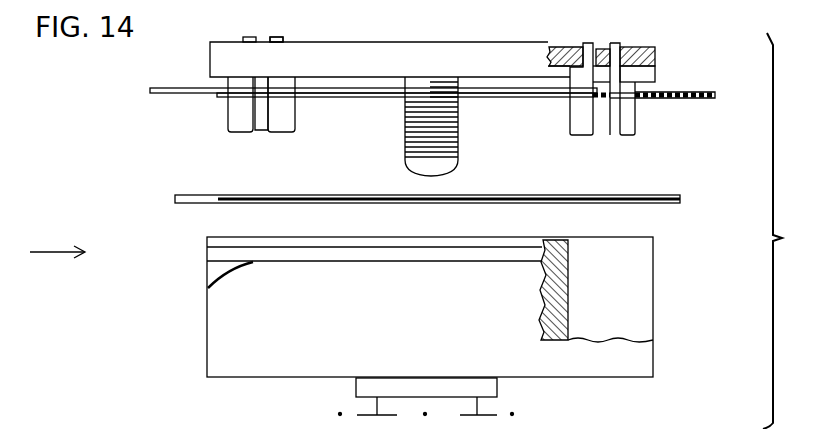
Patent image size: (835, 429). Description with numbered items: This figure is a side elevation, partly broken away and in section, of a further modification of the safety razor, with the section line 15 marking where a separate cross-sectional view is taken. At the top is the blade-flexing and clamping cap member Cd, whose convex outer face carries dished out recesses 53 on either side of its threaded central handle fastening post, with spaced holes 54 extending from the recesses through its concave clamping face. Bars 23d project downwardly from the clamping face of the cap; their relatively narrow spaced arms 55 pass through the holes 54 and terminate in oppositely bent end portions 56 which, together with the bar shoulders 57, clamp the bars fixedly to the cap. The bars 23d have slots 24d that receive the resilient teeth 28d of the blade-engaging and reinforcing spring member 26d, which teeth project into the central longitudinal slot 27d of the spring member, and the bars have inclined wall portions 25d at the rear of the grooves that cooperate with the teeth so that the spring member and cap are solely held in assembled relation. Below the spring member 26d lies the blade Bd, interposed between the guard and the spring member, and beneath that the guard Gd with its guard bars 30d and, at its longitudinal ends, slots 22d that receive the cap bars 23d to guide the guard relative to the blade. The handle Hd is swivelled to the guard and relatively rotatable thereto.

The section line 15 is at (262, 258).
The cap member Cd is at (448, 43).
The oppositely bent end portions 56 is at (283, 40).
The bars 23d is at (296, 117).
The inclined wall portions 25d is at (262, 118).
The slots 24d is at (262, 84).
The spring member 26d is at (152, 91).
The central longitudinal slot 27d is at (558, 99).
The dished out recesses 53 is at (603, 46).
The bar shoulders 57 is at (568, 68).
The resilient teeth 28d is at (596, 98).
The arms 55 is at (614, 50).
The holes 54 is at (622, 44).
The blade Bd is at (189, 195).
The guard Gd is at (207, 356).
The guard bars 30d is at (208, 288).
The slots 22d is at (630, 316).
The handle Hd is at (497, 398).